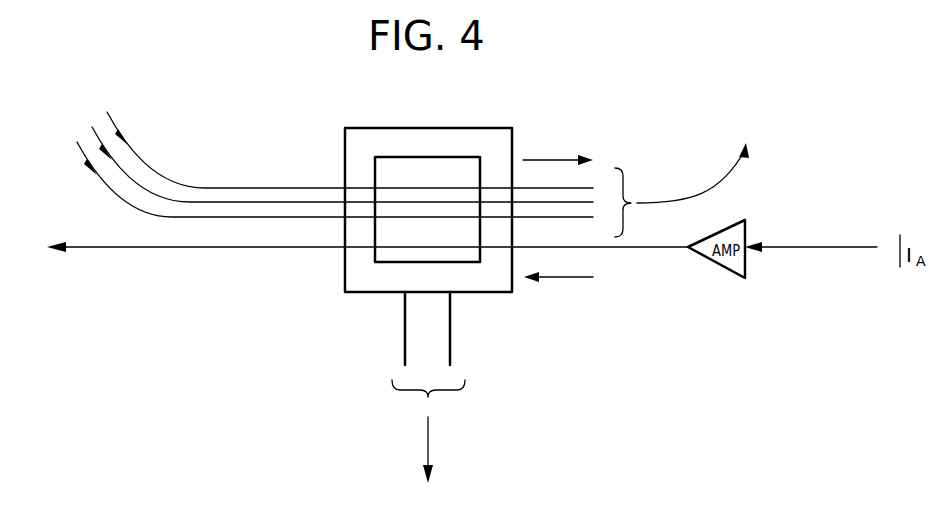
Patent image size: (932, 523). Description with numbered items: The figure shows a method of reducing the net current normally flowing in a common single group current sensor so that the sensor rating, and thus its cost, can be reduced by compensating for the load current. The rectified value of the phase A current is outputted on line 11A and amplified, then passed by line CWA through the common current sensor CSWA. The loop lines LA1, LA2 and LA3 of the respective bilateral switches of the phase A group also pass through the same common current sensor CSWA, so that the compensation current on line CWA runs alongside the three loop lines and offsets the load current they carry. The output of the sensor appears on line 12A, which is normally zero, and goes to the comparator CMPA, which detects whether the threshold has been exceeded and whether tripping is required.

The loop line LA1 is at (128, 146).
The loop line LA2 is at (188, 201).
The loop line LA3 is at (233, 217).
The compensation line CWA is at (217, 247).
The common current sensor CSWA is at (463, 280).
The line 11A is at (810, 247).
The output line 12A is at (428, 443).
The comparator CMPA is at (429, 506).